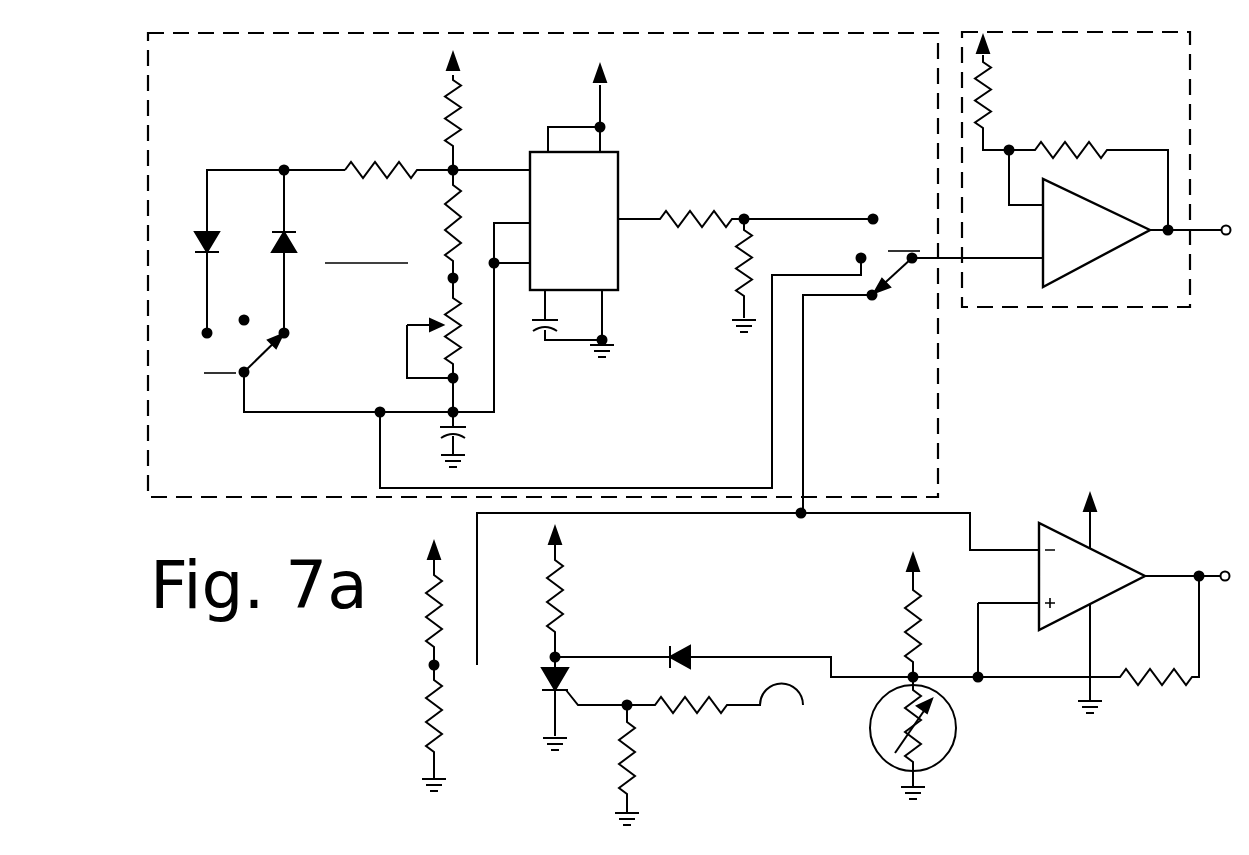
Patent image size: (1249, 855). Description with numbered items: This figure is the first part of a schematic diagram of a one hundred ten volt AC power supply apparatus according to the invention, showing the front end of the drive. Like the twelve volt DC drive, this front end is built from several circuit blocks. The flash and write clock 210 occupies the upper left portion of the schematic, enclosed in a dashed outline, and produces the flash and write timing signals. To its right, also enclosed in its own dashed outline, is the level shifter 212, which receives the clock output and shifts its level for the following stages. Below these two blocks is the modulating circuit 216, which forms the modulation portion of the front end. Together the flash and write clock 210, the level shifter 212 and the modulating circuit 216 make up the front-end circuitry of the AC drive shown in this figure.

The flash and write clock 210 is at (356, 497).
The level shifter 212 is at (1126, 307).
The modulating circuit 216 is at (1148, 755).